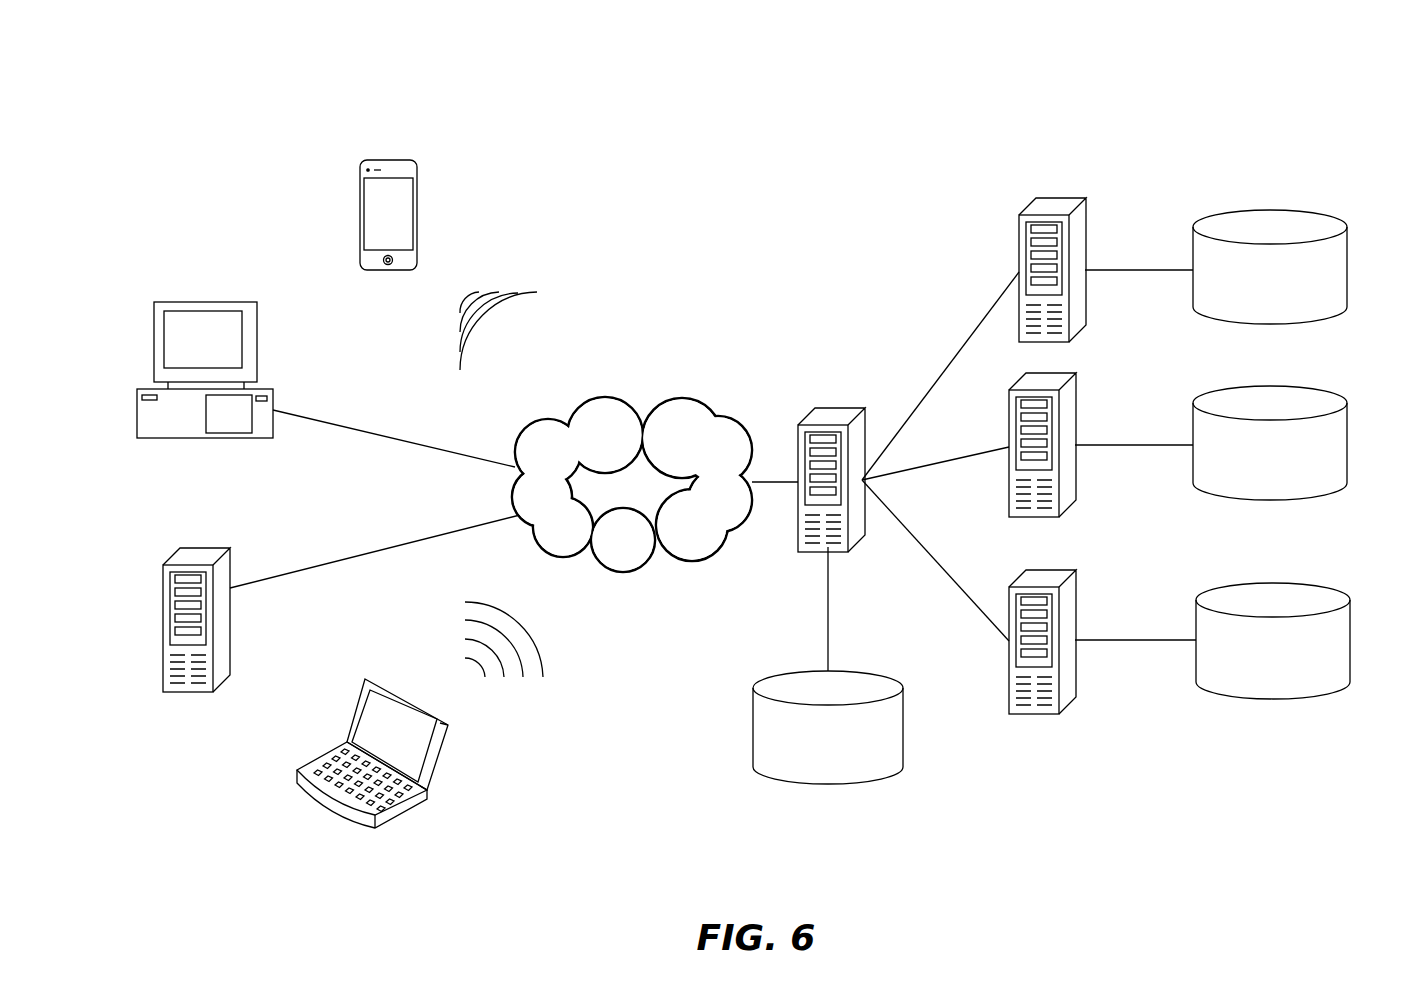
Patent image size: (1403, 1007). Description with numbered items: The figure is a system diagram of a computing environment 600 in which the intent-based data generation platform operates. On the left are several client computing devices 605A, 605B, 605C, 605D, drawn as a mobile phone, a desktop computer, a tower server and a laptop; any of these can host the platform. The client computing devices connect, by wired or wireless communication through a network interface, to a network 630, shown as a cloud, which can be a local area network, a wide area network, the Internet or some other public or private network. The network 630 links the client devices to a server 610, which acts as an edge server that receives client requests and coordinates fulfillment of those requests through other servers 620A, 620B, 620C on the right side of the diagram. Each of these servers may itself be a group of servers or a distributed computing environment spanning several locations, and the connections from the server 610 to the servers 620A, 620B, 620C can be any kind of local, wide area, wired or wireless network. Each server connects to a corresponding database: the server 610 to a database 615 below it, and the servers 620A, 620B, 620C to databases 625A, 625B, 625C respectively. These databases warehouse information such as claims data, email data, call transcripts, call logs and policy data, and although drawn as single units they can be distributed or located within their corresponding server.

The environment 600 is at (240, 111).
The client computing device 605A is at (417, 170).
The client computing device 605B is at (258, 318).
The client computing device 605C is at (215, 550).
The client computing device 605D is at (445, 776).
The server 610 is at (845, 410).
The database 615 is at (830, 680).
The server 620A is at (1060, 205).
The server 620B is at (1052, 380).
The server 620C is at (1052, 578).
The database 625A is at (1273, 218).
The database 625B is at (1273, 396).
The database 625C is at (1273, 593).
The network 630 is at (632, 484).